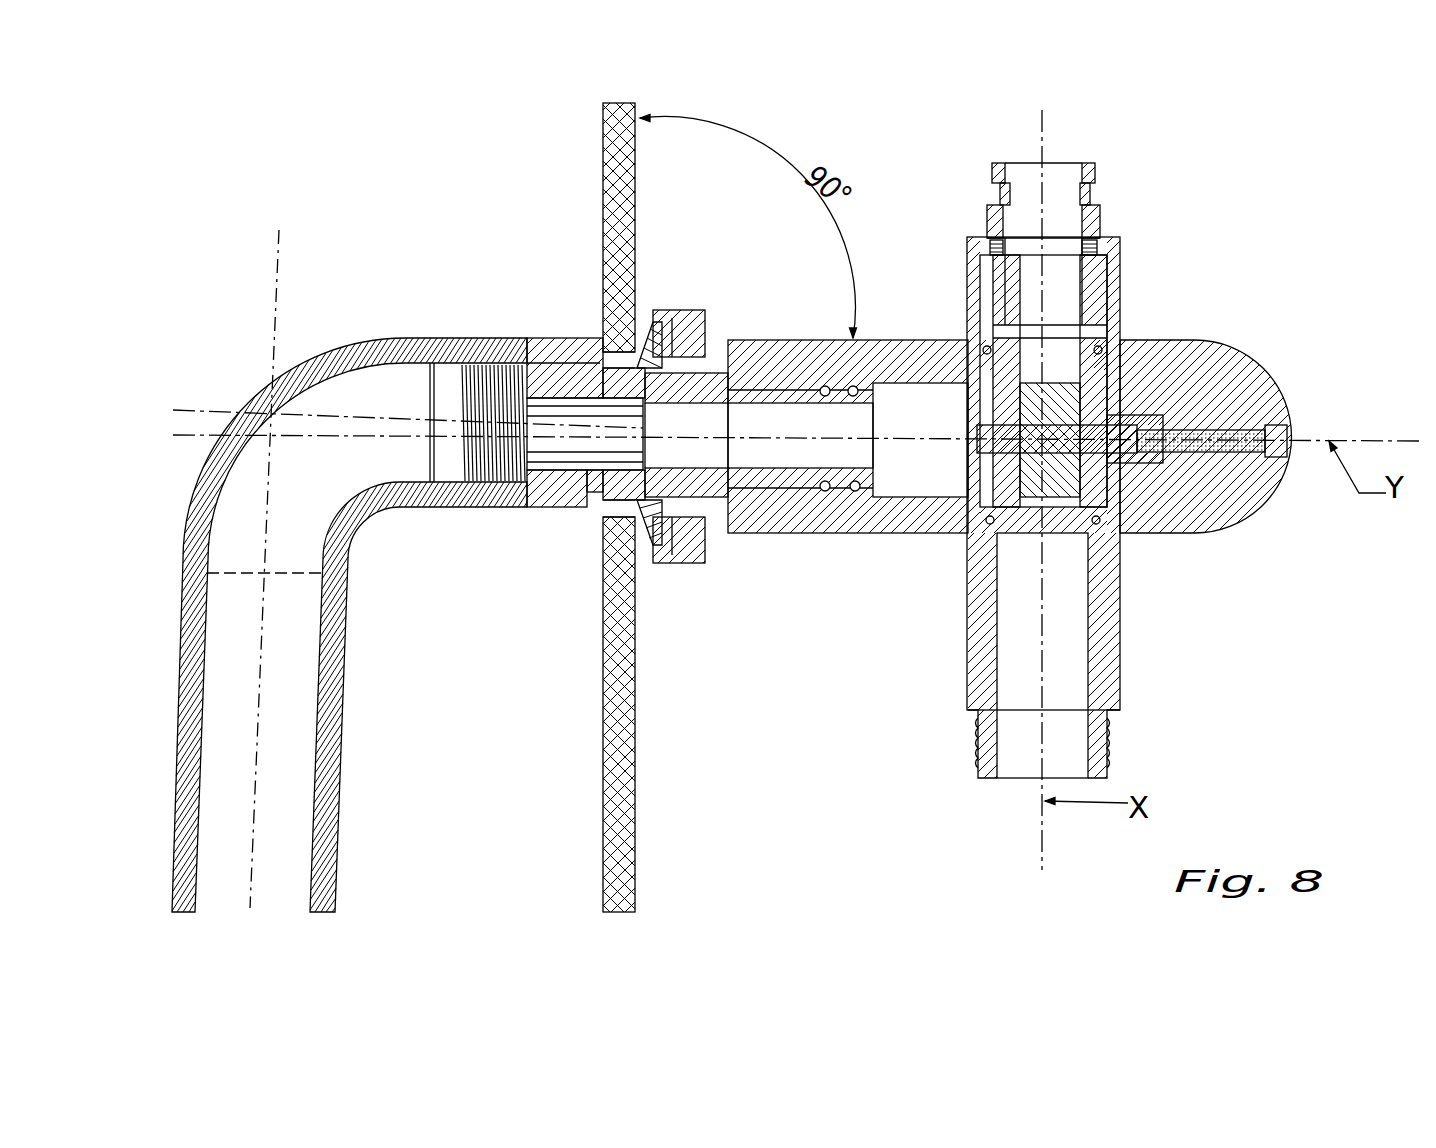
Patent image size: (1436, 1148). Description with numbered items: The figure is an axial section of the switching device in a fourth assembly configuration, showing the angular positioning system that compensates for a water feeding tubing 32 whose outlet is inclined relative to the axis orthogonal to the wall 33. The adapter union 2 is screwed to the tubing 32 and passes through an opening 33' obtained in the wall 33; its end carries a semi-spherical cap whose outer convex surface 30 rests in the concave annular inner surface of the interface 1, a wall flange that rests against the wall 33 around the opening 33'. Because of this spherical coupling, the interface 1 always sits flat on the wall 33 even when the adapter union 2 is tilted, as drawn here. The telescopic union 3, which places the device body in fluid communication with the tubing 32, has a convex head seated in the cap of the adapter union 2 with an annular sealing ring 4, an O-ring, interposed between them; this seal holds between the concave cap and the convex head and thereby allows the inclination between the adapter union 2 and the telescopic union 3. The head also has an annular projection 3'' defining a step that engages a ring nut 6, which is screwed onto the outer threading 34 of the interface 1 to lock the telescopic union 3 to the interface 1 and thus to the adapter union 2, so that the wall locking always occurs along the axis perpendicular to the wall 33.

The interface 1 is at (603, 250).
The adapter union 2 is at (565, 507).
The telescopic union 3 is at (1008, 470).
The annular projection 3'' is at (686, 532).
The annular sealing ring 4 is at (660, 548).
The ring nut 6 is at (695, 310).
The surface 30 is at (555, 274).
The water feeding tubing 32 is at (349, 625).
The wall 33 is at (581, 507).
The opening 33' is at (589, 570).
The outer threading 34 is at (660, 308).